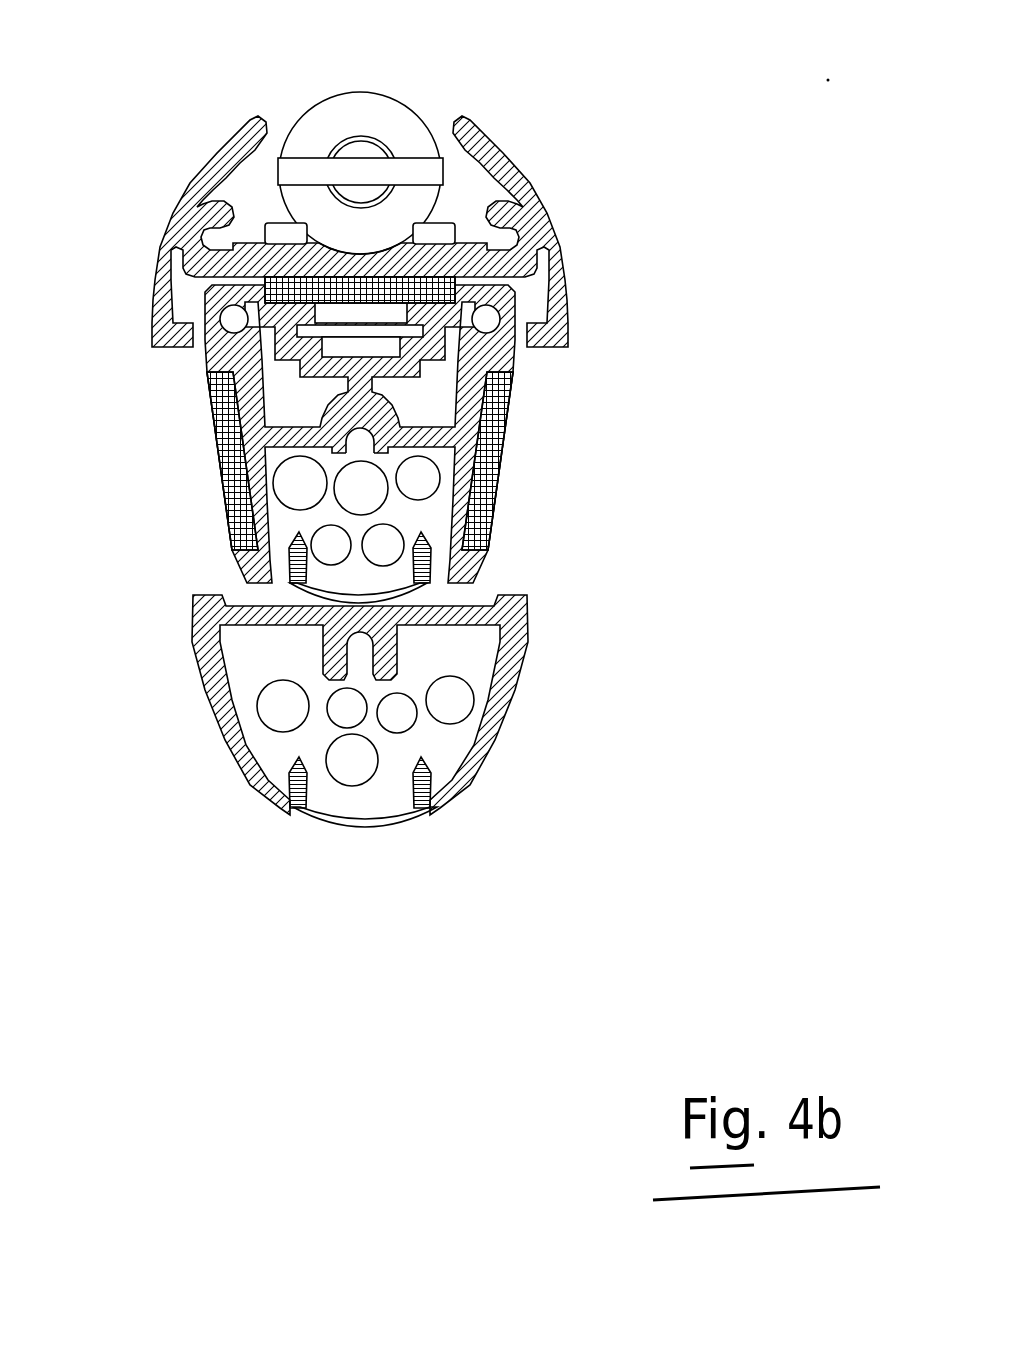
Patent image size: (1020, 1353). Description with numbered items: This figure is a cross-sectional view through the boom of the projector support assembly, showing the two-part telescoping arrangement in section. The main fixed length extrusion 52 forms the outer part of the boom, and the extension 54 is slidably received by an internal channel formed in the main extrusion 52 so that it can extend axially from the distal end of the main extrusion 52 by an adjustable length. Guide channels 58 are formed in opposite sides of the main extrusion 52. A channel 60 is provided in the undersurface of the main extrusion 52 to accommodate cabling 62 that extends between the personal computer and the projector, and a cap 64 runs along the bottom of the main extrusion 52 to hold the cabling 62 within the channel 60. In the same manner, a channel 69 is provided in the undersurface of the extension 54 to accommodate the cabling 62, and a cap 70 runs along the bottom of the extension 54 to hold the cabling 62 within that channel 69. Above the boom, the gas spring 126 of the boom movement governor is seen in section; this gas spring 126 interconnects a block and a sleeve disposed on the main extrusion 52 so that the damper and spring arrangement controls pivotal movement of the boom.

The gas spring 126 is at (377, 113).
The extension 54 is at (503, 341).
The guide channels 58 is at (562, 497).
The main fixed length extrusion 52 is at (522, 613).
The cap 70 is at (400, 595).
The channel 69 is at (287, 520).
The cabling 62 is at (323, 562).
The channel 60 is at (450, 742).
The cap 64 is at (368, 825).